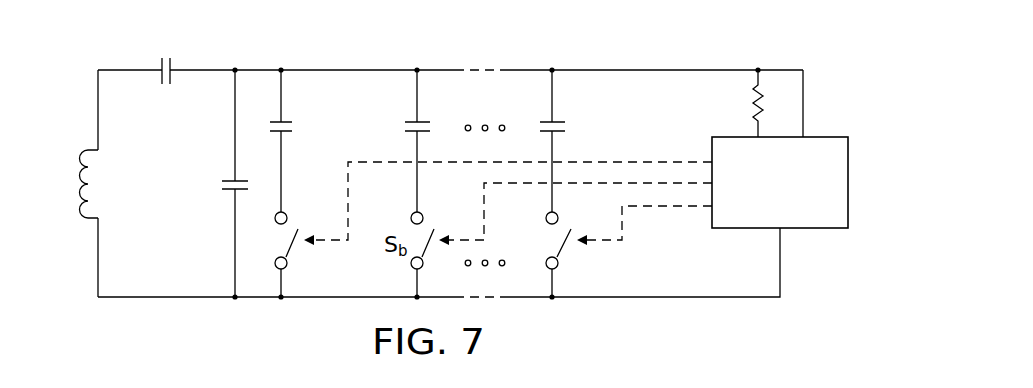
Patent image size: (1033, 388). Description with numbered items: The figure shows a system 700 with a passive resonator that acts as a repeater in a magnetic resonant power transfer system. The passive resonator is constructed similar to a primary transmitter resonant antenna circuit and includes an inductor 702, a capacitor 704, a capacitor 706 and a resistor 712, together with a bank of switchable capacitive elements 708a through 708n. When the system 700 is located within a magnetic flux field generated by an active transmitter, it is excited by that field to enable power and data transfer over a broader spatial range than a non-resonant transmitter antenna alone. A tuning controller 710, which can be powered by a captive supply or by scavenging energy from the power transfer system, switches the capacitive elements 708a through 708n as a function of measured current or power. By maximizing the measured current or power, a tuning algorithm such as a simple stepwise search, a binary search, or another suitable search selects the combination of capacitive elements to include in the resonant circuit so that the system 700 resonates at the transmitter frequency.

The system 700 is at (841, 45).
The inductor 702 is at (80, 192).
The capacitor 704 is at (164, 56).
The capacitor 706 is at (222, 185).
The capacitive element 708a is at (296, 126).
The capacitive element 708n is at (567, 128).
The tuning controller 710 is at (850, 172).
The resistor 712 is at (750, 102).